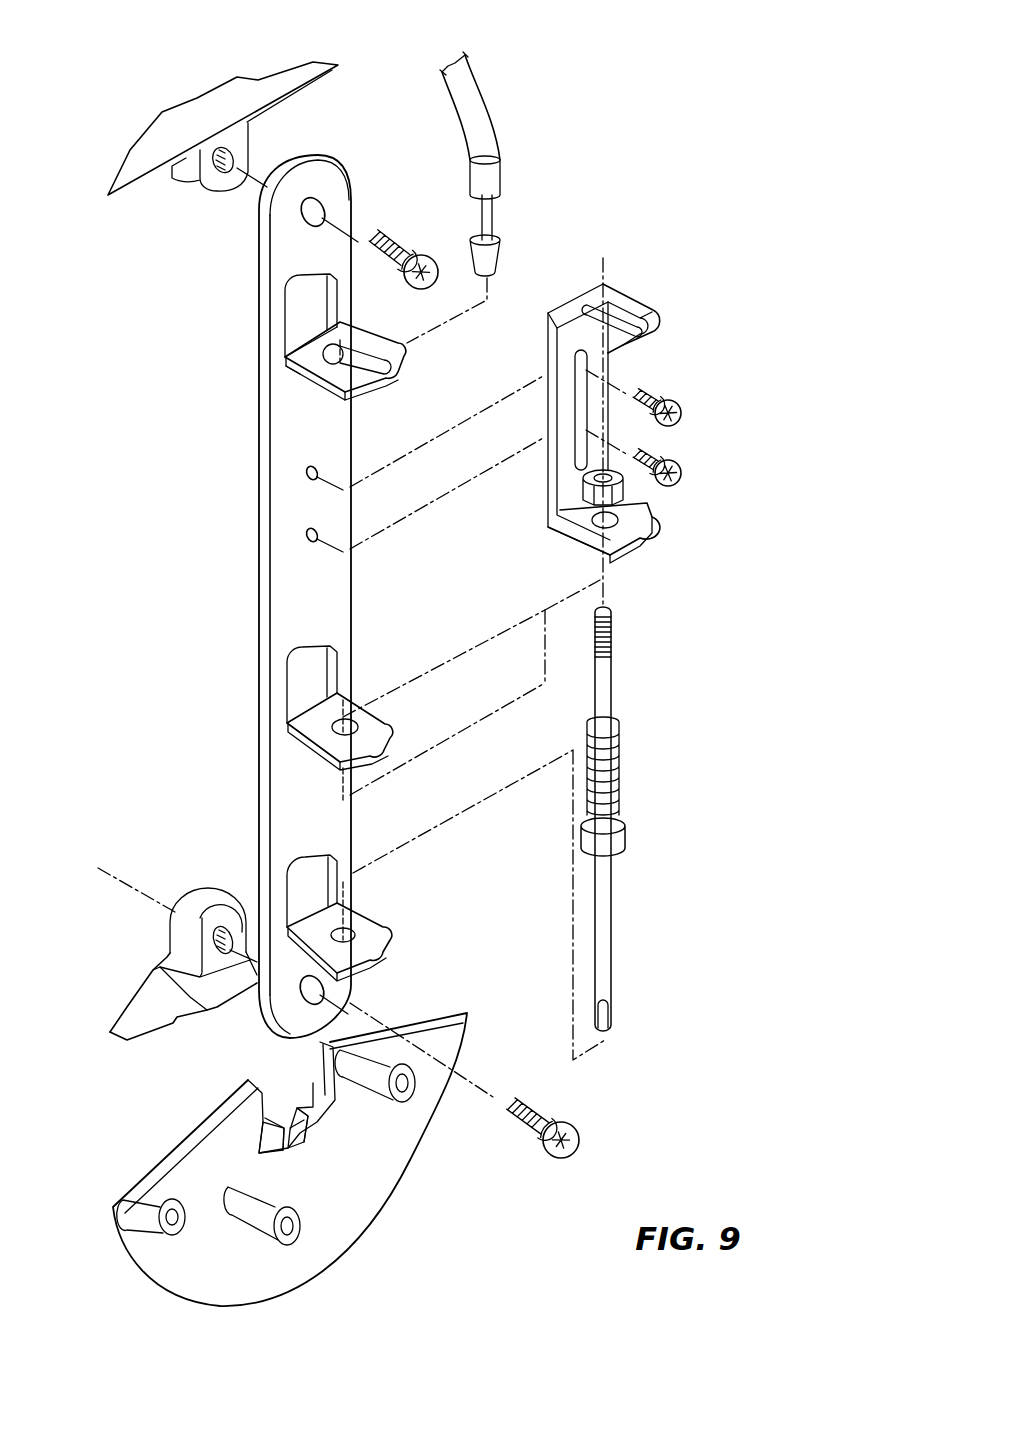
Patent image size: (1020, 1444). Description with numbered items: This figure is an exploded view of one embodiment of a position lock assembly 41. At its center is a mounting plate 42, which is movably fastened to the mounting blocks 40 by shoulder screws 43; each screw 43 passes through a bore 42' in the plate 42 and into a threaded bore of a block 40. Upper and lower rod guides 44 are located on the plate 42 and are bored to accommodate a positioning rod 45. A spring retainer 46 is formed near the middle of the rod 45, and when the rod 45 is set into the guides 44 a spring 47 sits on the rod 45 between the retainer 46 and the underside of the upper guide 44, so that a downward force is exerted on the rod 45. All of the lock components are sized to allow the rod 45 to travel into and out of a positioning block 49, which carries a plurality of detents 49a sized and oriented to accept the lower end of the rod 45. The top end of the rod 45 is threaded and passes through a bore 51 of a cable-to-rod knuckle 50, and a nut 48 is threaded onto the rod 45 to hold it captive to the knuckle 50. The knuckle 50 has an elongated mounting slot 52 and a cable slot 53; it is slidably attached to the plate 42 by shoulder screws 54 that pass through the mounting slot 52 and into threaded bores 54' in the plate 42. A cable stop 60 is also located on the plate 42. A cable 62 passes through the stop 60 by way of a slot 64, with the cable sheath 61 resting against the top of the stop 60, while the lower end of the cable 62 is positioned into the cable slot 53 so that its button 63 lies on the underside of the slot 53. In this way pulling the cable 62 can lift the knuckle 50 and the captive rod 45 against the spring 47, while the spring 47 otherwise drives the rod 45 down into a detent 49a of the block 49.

The mounting block 40 is at (186, 185).
The position lock assembly 41 is at (205, 648).
The mounting plate 42 is at (250, 596).
The bore 42' is at (260, 635).
The shoulder screw 43 is at (405, 247).
The rod guide 44 is at (318, 724).
The positioning rod 45 is at (625, 990).
The spring retainer 46 is at (620, 840).
The spring 47 is at (622, 790).
The nut 48 is at (548, 530).
The positioning block 49 is at (407, 1150).
The detent 49a is at (297, 1113).
The cable-to-rod knuckle 50 is at (648, 538).
The bore 51 is at (620, 507).
The mounting slot 52 is at (592, 423).
The cable slot 53 is at (615, 318).
The shoulder screw 54 is at (715, 428).
The threaded bore 54' is at (348, 463).
The cable stop 60 is at (310, 334).
The cable sheath 61 is at (492, 135).
The cable 62 is at (496, 214).
The button 63 is at (505, 258).
The slot 64 is at (358, 376).